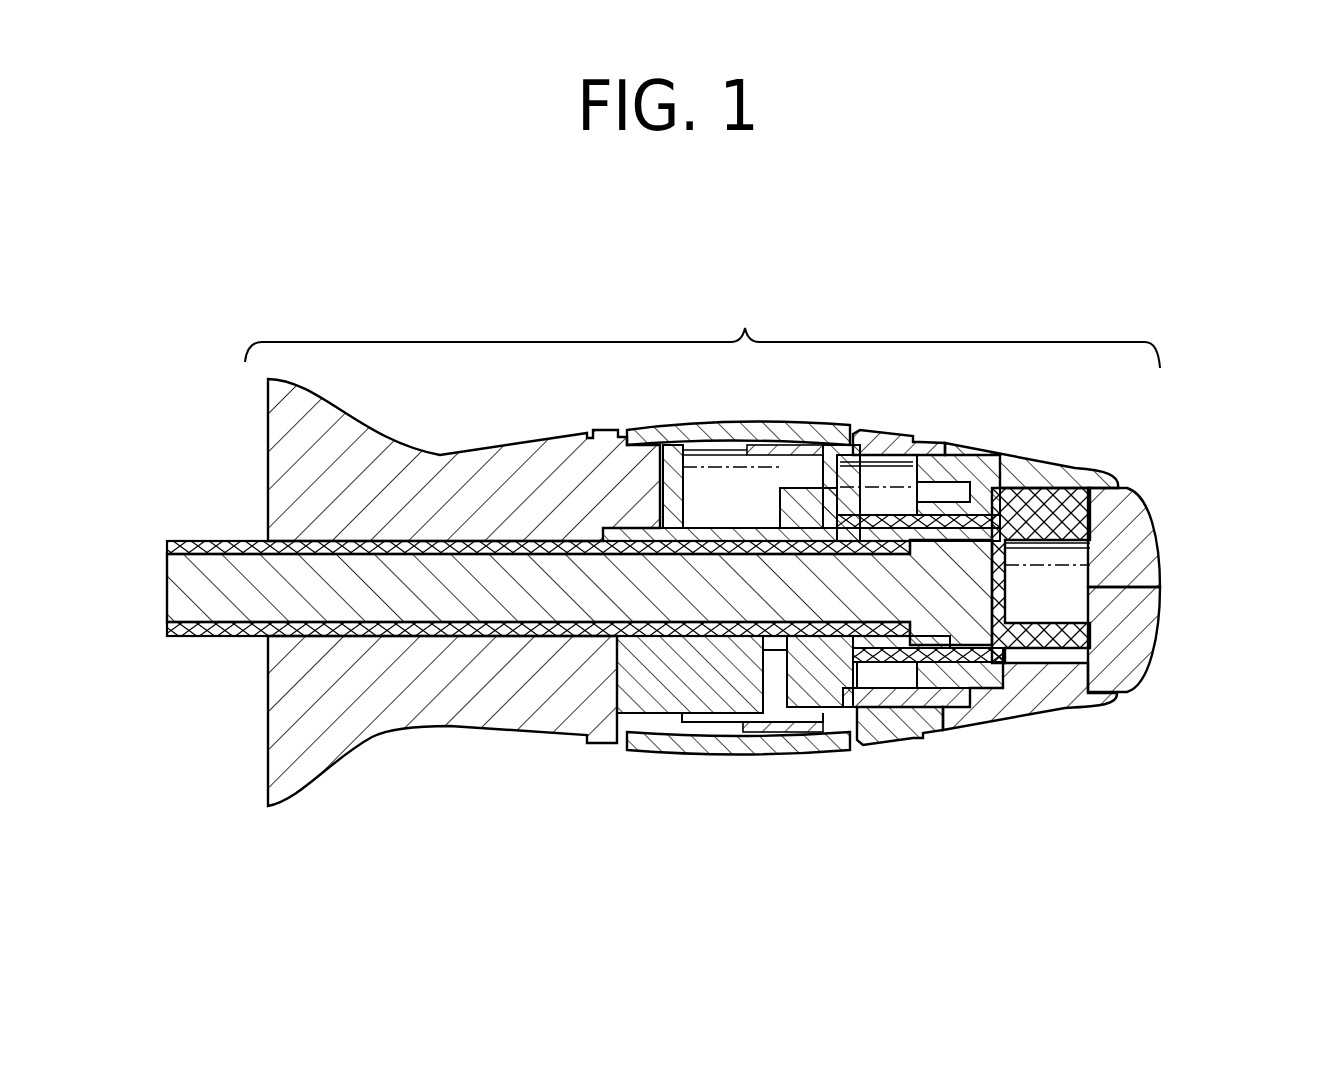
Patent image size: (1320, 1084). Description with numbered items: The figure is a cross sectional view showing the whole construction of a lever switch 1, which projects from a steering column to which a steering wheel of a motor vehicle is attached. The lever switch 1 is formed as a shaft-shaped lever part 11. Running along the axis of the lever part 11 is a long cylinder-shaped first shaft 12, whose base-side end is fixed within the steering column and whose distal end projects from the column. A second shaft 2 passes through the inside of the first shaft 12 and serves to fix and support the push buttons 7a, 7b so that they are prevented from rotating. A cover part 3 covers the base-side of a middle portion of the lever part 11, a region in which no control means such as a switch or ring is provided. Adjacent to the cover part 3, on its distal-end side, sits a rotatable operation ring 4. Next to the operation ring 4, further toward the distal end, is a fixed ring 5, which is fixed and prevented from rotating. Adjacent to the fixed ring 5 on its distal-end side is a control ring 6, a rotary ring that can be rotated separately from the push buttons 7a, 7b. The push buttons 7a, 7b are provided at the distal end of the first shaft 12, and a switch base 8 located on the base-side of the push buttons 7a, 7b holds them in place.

The lever switch 1 is at (1098, 332).
The second shaft 2 is at (200, 592).
The cover part 3 is at (385, 738).
The operation ring 4 is at (700, 755).
The fixed ring 5 is at (883, 747).
The control ring 6 is at (1067, 717).
The push button 7a is at (1149, 538).
The push button 7b is at (1149, 638).
The switch base 8 is at (1083, 470).
The lever part 11 is at (702, 322).
The first shaft 12 is at (218, 545).